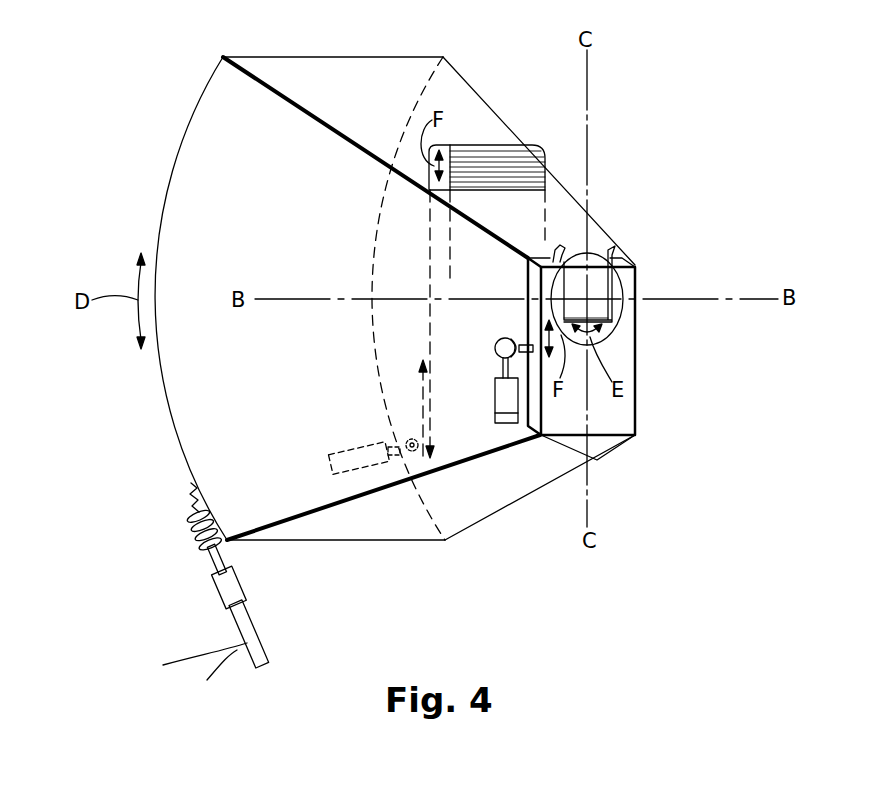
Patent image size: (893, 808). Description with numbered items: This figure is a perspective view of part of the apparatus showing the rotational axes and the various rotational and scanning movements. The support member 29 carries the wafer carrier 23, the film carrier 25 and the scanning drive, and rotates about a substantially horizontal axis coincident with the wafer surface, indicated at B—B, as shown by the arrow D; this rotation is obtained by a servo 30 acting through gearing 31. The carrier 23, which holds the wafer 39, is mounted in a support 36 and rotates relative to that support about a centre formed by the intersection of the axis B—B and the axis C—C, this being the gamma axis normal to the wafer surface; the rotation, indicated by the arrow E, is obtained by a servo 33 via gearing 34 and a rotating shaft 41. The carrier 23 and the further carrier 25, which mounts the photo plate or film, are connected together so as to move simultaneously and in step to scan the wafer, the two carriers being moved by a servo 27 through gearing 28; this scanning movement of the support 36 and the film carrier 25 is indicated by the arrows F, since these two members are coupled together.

The carrier 23 is at (620, 312).
The further carrier 25 is at (498, 147).
The servo 27 is at (350, 450).
The gearing 28 is at (404, 423).
The support member 29 is at (262, 57).
The servo 30 is at (257, 628).
The gearing 31 is at (190, 540).
The servo 33 is at (495, 392).
The gearing 34 is at (502, 337).
The support 36 is at (625, 353).
The wafer 39 is at (590, 258).
The rotating shaft 41 is at (527, 345).